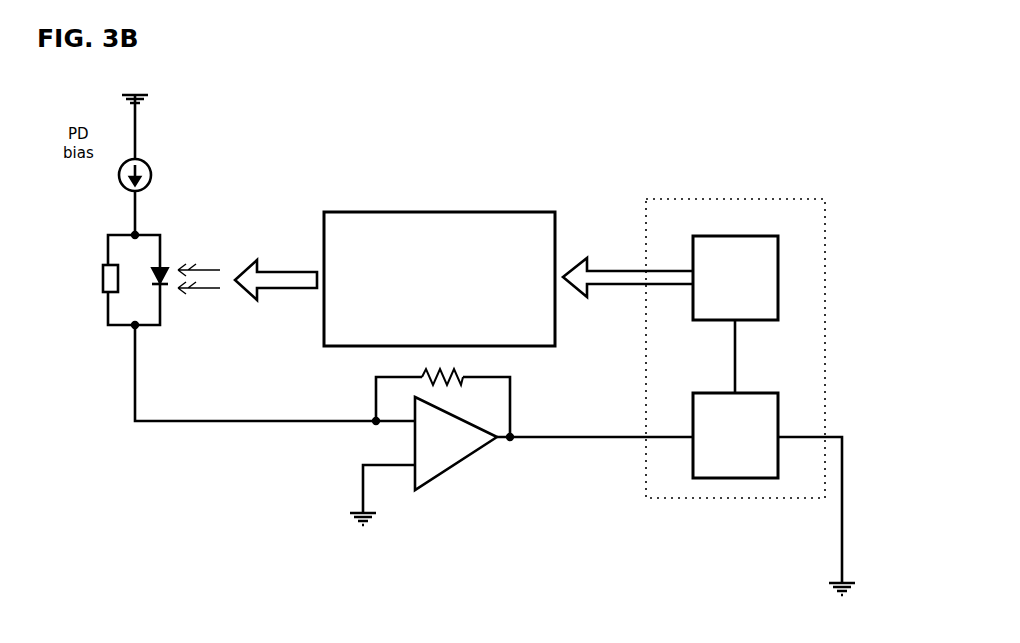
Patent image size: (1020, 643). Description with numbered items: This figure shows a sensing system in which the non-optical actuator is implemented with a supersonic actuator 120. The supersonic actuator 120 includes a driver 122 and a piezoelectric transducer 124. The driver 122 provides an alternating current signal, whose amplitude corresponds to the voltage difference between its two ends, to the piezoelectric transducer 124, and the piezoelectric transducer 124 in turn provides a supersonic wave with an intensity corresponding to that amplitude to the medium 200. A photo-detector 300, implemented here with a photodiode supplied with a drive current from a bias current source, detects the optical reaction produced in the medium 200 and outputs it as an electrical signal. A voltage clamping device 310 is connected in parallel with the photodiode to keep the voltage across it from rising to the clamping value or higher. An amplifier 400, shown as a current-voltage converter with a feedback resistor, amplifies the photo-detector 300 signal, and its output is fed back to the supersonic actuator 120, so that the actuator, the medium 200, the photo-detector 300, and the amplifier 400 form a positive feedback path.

The supersonic actuator 120 is at (766, 199).
The driver 122 is at (735, 435).
The piezoelectric transducer 124 is at (735, 278).
The medium 200 is at (439, 279).
The photo-detector 300 is at (186, 264).
The voltage clamping device 310 is at (103, 287).
The amplifier 400 is at (521, 447).